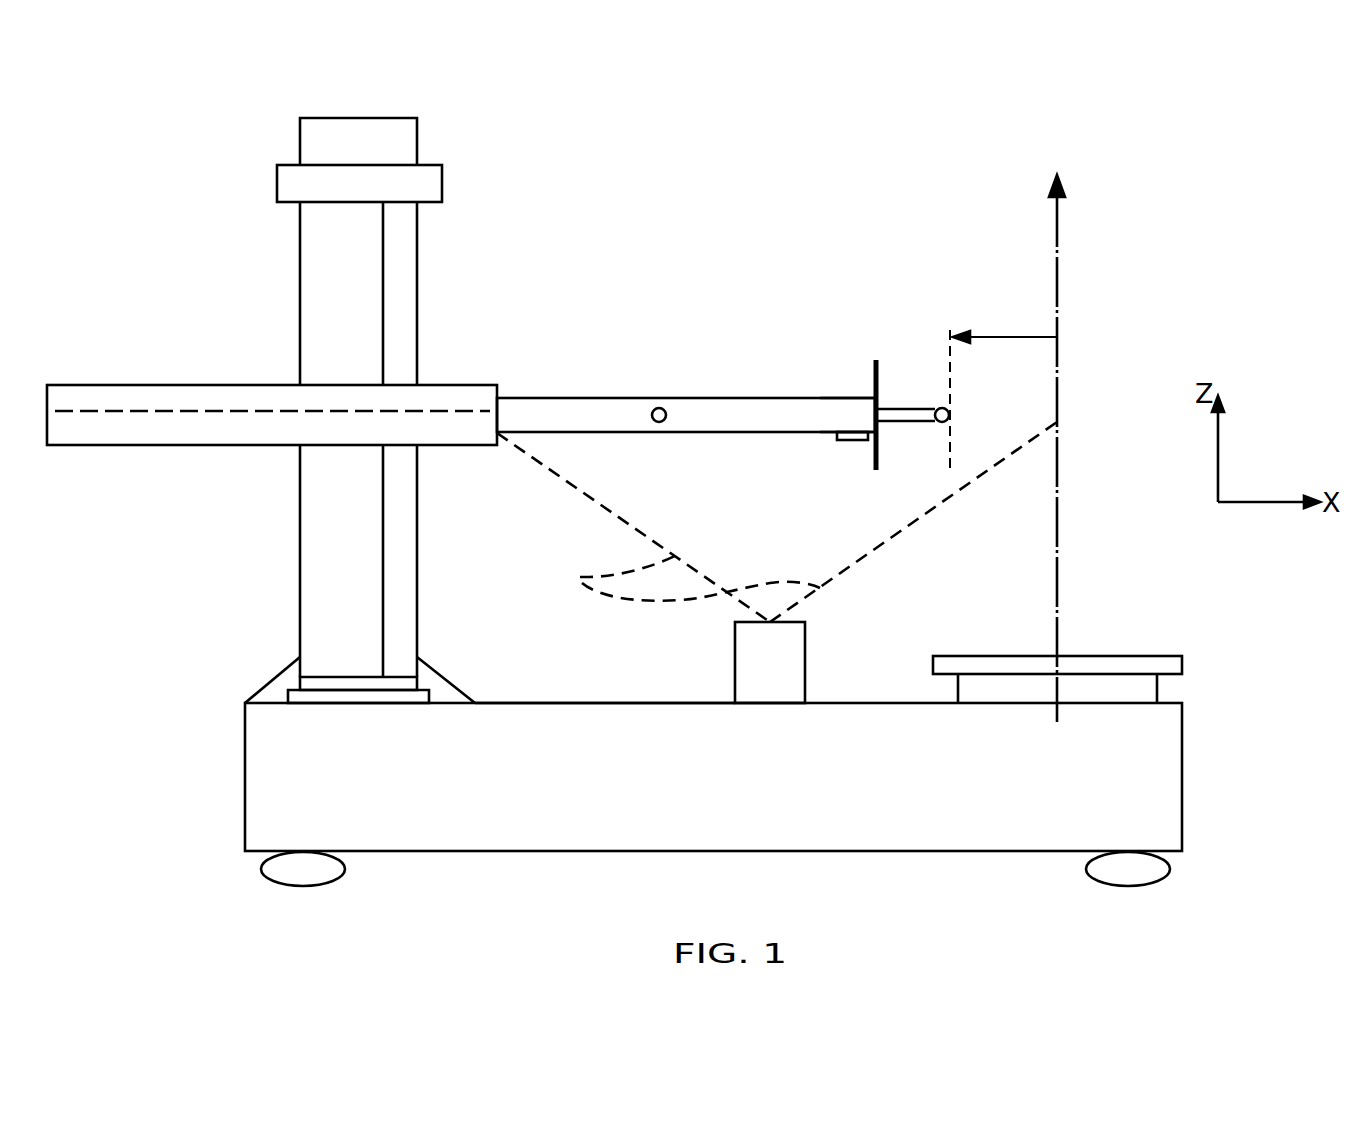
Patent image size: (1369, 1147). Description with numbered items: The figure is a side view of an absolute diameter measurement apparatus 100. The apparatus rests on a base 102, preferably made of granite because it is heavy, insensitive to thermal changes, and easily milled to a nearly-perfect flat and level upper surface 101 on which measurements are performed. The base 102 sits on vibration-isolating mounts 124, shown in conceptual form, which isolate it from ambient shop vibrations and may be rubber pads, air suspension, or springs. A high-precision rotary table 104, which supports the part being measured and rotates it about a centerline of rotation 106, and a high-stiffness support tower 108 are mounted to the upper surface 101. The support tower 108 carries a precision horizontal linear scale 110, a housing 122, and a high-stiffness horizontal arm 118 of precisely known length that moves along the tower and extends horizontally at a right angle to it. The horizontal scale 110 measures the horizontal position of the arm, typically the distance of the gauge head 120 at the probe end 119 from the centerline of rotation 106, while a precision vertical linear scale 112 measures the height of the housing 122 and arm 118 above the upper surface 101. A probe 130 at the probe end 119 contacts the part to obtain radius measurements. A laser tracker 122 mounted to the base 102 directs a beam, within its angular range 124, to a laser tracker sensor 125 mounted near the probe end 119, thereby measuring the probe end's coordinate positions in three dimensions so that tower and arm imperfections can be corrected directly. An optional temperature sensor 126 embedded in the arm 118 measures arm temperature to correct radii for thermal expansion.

The measurement apparatus 100 is at (1176, 156).
The upper surface 101 is at (540, 703).
The base 102 is at (732, 803).
The high-precision rotary table 104 is at (1183, 622).
The centerline of rotation 106 is at (1058, 273).
The high-stiffness support tower 108 is at (316, 133).
The precision horizontal linear scale (PHLS) 110 is at (258, 410).
The precision vertical linear scale (PVLS) 112 is at (384, 490).
The high-stiffness horizontal arm 118 is at (735, 398).
The probe end 119 is at (833, 398).
The gauge head 120 is at (878, 456).
The housing / laser tracker 122 is at (850, 658).
The vibration-isolating mount / angular range 124 is at (1281, 840).
The laser tracker sensor 125 is at (842, 443).
The temperature sensor 126 is at (659, 408).
The probe 130 is at (938, 408).